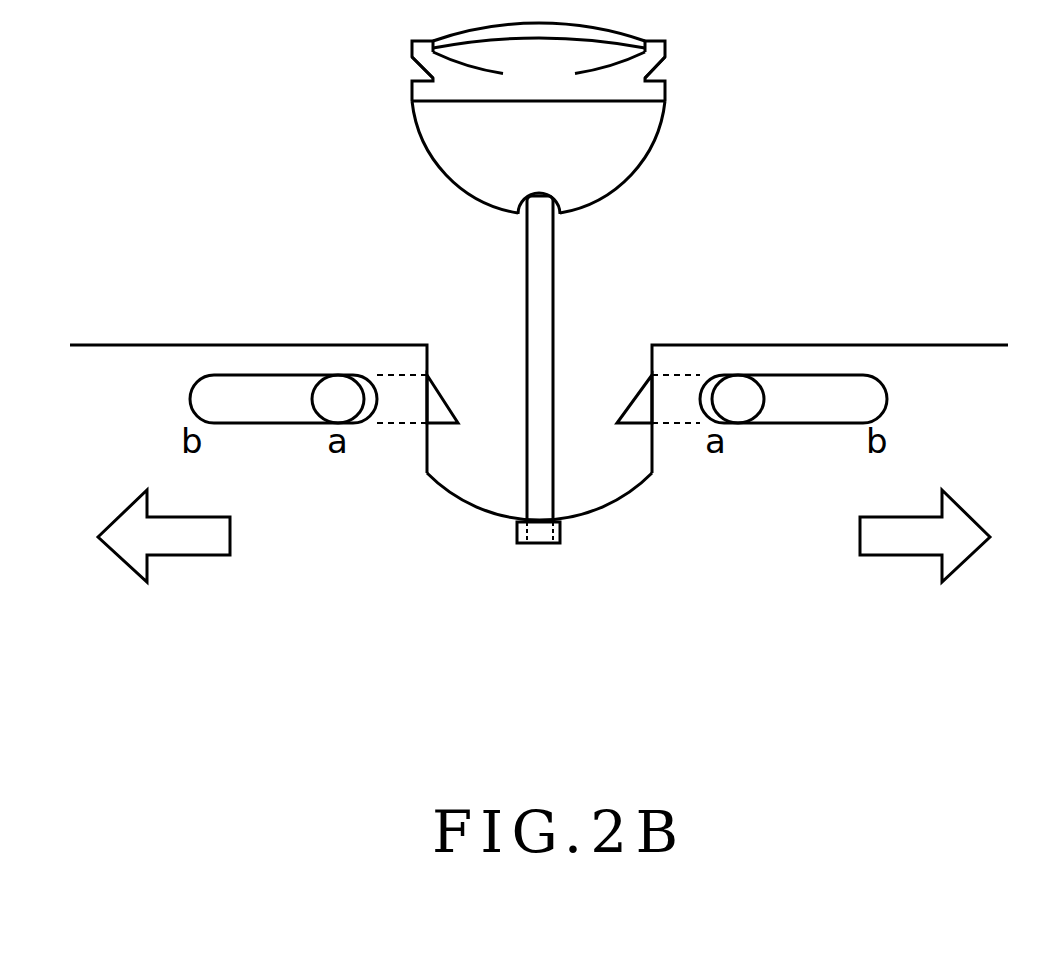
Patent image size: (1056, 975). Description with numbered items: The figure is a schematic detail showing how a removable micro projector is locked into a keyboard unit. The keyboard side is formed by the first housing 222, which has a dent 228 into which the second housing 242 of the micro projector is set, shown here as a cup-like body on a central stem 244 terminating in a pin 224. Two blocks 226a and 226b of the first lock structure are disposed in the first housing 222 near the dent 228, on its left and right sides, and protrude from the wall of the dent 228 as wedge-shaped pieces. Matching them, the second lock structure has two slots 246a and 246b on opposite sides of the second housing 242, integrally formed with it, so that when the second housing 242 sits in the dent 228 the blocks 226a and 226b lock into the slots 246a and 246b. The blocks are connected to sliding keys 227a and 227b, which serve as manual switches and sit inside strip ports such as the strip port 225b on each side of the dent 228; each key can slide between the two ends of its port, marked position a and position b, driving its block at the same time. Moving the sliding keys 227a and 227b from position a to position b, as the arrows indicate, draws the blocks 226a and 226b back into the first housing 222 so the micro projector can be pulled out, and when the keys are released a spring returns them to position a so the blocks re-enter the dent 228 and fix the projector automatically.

The first housing 222 is at (157, 345).
The pin 224 is at (538, 545).
The strip port 225b is at (208, 397).
The block 226a is at (632, 410).
The block 226b is at (447, 410).
The sliding key 227a is at (730, 397).
The sliding key 227b is at (338, 388).
The dent 228 is at (510, 405).
The second housing 242 is at (627, 149).
The stem 244 is at (545, 298).
The slot 246a is at (679, 63).
The slot 246b is at (398, 63).